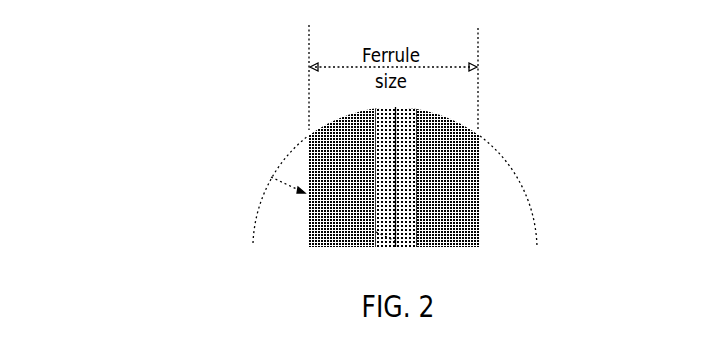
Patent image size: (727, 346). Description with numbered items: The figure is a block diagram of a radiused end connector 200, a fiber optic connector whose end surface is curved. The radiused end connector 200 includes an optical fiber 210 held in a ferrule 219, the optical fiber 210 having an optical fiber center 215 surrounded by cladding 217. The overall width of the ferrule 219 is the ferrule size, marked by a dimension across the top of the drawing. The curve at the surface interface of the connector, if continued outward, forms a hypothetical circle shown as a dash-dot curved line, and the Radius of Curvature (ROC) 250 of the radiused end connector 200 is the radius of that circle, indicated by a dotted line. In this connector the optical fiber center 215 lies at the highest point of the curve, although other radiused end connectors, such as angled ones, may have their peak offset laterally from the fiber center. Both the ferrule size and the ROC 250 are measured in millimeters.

The radiused end connector 200 is at (115, 99).
The optical fiber 210 is at (455, 127).
The ferrule 219 is at (440, 187).
The cladding 217 is at (410, 215).
The optical fiber center 215 is at (394, 227).
The Radius of Curvature (ROC) 250 is at (305, 193).